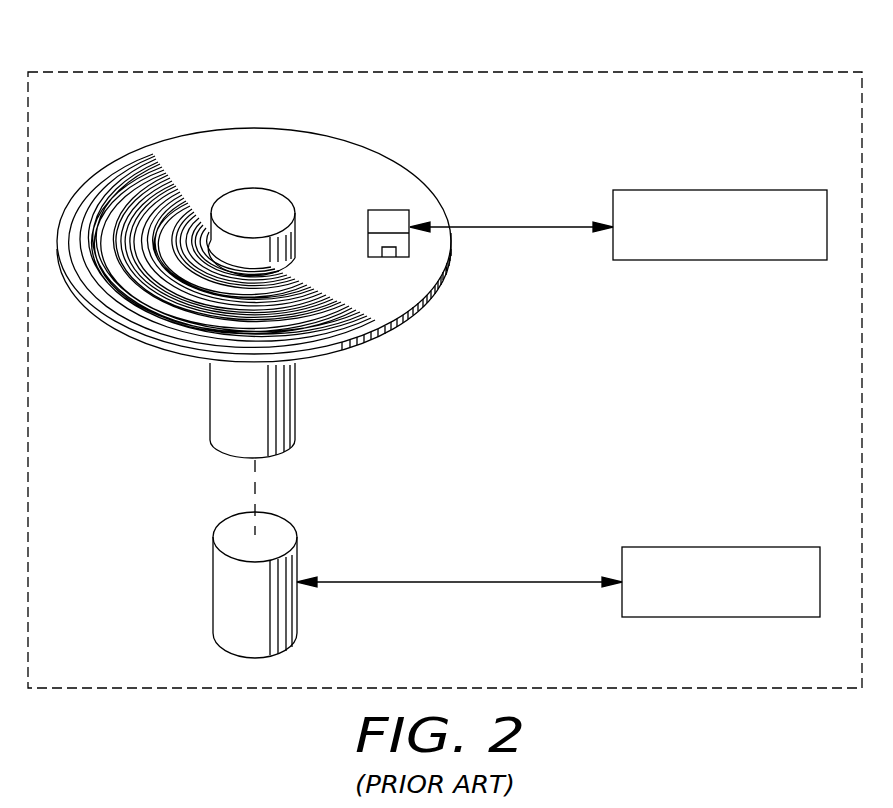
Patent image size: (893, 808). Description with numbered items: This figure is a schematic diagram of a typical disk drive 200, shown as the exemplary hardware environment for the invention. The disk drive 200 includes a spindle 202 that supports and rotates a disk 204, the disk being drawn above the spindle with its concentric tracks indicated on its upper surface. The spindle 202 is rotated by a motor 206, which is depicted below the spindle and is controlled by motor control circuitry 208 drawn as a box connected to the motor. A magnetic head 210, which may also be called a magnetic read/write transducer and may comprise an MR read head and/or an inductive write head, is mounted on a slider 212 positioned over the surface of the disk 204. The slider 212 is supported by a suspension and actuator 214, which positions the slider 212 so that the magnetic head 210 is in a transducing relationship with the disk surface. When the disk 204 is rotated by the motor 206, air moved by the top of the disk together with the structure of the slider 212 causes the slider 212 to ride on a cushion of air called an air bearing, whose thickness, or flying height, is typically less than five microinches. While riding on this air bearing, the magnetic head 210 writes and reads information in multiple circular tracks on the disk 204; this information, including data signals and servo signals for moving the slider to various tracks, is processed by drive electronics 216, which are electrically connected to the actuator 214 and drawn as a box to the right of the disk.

The disk drive 200 is at (727, 53).
The spindle 202 is at (210, 403).
The disk 204 is at (177, 136).
The motor 206 is at (213, 587).
The motor control circuitry 208 is at (735, 547).
The magnetic head 210 is at (388, 258).
The slider 212 is at (388, 210).
The suspension and actuator 214 is at (516, 226).
The drive electronics 216 is at (733, 190).